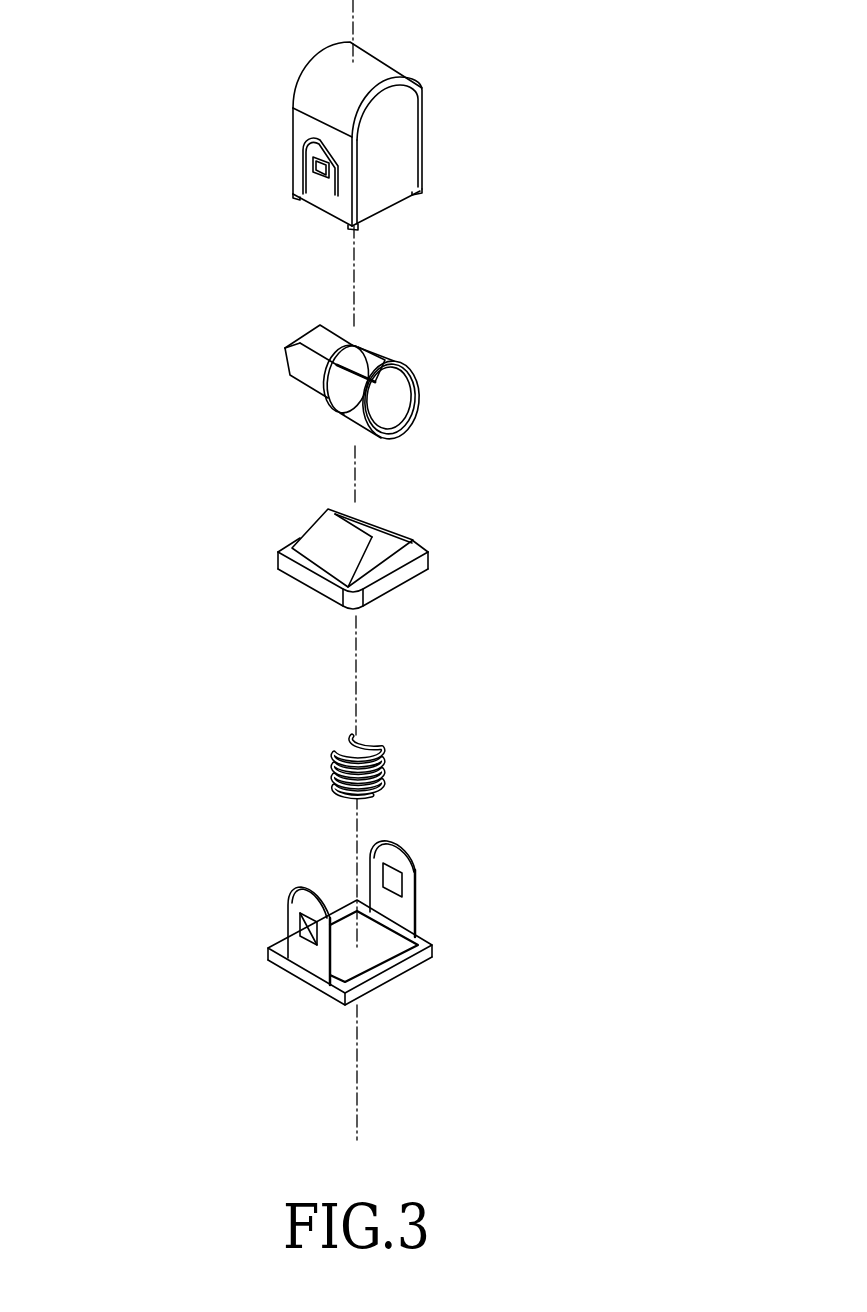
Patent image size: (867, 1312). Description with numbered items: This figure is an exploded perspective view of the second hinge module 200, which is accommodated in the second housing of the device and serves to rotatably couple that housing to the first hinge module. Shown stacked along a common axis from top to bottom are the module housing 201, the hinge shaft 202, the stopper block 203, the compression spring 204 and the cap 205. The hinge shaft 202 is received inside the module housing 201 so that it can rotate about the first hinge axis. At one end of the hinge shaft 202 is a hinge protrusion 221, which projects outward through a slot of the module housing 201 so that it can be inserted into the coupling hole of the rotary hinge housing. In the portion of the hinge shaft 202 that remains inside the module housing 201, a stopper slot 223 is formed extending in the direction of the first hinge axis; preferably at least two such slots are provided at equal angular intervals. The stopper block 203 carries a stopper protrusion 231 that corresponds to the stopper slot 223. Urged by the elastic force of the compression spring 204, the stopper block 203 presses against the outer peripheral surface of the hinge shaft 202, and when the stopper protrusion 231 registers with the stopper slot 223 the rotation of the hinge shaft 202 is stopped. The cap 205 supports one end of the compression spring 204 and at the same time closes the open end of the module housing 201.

The second hinge module 200 is at (91, 126).
The module housing 201 is at (378, 65).
The hinge shaft 202 is at (347, 359).
The hinge protrusion 221 is at (292, 337).
The stopper slot 223 is at (383, 366).
The stopper block 203 is at (359, 533).
The stopper protrusion 231 is at (372, 536).
The compression spring 204 is at (330, 763).
The cap 205 is at (312, 969).